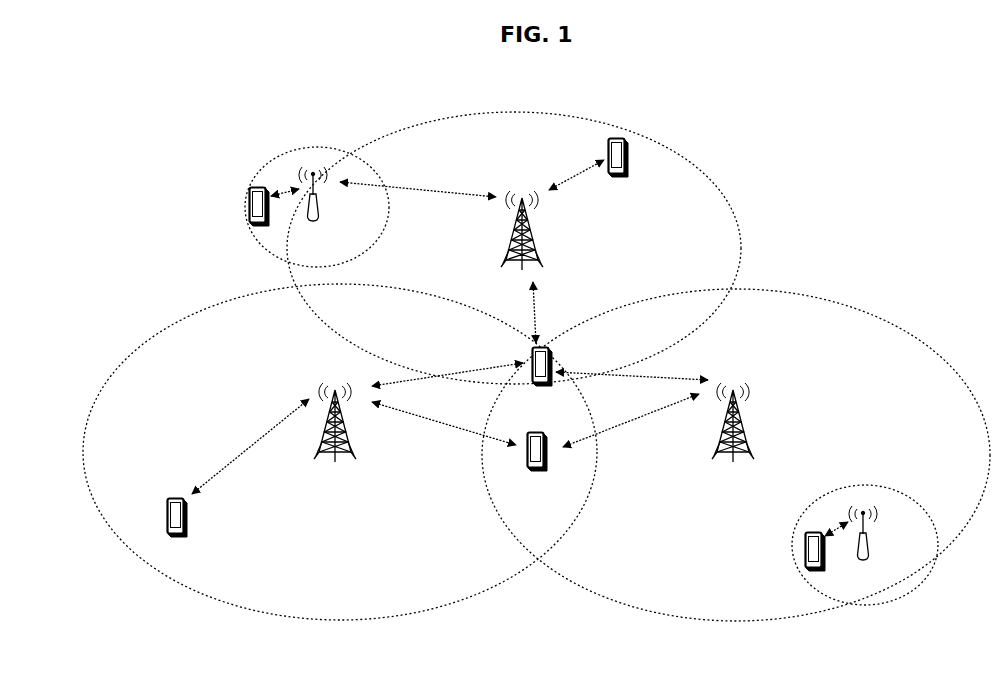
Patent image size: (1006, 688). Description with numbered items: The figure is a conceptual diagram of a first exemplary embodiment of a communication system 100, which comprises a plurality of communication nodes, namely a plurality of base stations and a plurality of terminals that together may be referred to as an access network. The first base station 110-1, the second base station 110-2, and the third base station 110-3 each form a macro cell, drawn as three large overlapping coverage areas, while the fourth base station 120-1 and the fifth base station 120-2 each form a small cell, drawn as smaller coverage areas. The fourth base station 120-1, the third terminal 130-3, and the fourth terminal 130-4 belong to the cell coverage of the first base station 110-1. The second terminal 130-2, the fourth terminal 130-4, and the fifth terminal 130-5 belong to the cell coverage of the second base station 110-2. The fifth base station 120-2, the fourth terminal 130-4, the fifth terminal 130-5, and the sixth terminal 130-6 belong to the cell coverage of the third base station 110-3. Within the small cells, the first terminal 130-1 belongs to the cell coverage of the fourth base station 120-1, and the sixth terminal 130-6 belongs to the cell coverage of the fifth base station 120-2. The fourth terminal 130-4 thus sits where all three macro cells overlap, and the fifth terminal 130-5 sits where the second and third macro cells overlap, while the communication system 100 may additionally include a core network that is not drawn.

The communication system 100 is at (528, 87).
The first base station 110-1 is at (532, 237).
The second base station 110-2 is at (335, 462).
The third base station 110-3 is at (743, 427).
The fourth base station 120-1 is at (325, 208).
The fifth base station 120-2 is at (872, 536).
The first terminal 130-1 is at (249, 207).
The second terminal 130-2 is at (186, 517).
The third terminal 130-3 is at (628, 162).
The fourth terminal 130-4 is at (550, 350).
The fifth terminal 130-5 is at (558, 410).
The sixth terminal 130-6 is at (804, 550).